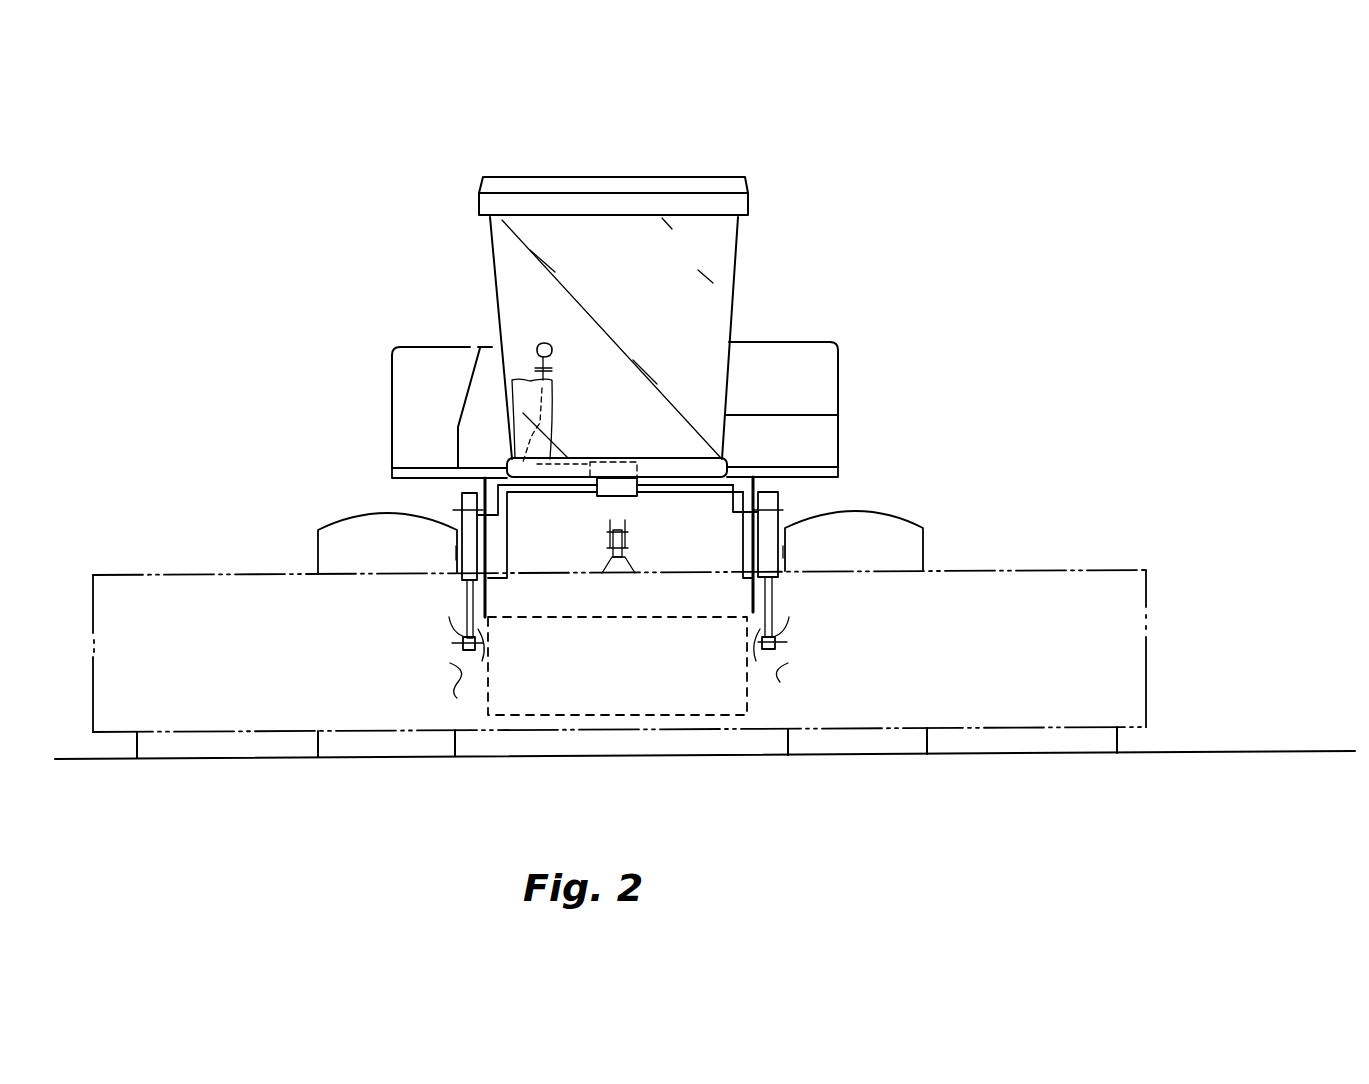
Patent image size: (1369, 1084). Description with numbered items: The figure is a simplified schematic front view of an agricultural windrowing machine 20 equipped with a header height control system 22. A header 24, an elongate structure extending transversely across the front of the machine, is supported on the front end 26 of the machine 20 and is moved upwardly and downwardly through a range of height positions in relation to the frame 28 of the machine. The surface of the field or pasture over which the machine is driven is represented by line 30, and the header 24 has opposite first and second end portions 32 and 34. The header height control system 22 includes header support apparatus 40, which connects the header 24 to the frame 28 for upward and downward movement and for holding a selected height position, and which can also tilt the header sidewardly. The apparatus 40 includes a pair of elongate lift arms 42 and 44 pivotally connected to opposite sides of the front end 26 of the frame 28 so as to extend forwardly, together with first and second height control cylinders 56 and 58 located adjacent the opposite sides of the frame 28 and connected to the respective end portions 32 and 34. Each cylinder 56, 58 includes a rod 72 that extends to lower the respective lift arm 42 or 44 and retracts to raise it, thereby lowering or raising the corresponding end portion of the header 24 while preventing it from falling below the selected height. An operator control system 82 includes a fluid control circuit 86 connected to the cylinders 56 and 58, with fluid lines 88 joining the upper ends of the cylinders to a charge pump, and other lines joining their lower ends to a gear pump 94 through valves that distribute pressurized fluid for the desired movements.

The agricultural windrowing machine 20 is at (887, 150).
The header height control system 22 is at (808, 659).
The header 24 is at (1147, 592).
The front end 26 is at (738, 455).
The frame 28 is at (677, 428).
The line 30 is at (1287, 748).
The first end portion 32 is at (783, 627).
The second end portion 34 is at (133, 737).
The header support apparatus 40 is at (458, 552).
The lift arm 42 is at (781, 657).
The lift arm 44 is at (452, 663).
The first height control cylinder 56 is at (790, 525).
The second height control cylinder 58 is at (458, 512).
The rod 72 is at (467, 598).
The operator control system 82 is at (615, 462).
The fluid control circuit 86 is at (666, 497).
The fluid lines 88 is at (663, 482).
The gear pump 94 is at (508, 540).